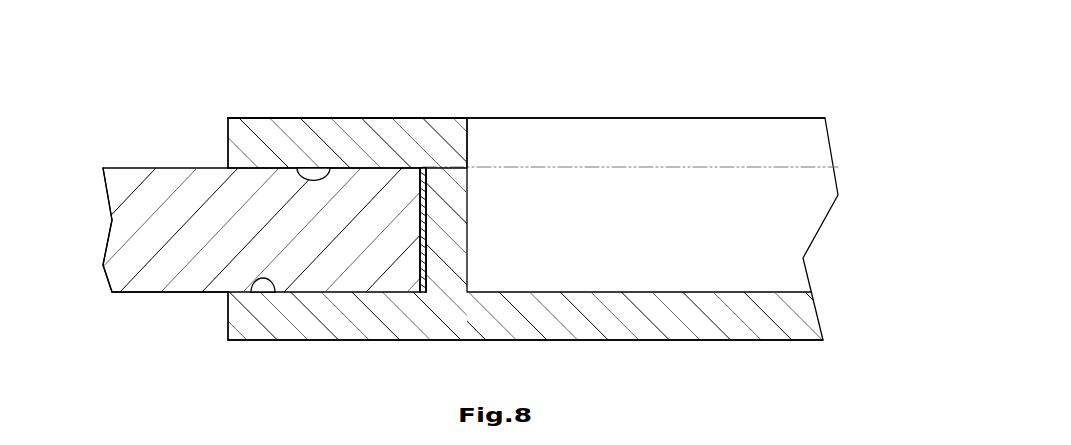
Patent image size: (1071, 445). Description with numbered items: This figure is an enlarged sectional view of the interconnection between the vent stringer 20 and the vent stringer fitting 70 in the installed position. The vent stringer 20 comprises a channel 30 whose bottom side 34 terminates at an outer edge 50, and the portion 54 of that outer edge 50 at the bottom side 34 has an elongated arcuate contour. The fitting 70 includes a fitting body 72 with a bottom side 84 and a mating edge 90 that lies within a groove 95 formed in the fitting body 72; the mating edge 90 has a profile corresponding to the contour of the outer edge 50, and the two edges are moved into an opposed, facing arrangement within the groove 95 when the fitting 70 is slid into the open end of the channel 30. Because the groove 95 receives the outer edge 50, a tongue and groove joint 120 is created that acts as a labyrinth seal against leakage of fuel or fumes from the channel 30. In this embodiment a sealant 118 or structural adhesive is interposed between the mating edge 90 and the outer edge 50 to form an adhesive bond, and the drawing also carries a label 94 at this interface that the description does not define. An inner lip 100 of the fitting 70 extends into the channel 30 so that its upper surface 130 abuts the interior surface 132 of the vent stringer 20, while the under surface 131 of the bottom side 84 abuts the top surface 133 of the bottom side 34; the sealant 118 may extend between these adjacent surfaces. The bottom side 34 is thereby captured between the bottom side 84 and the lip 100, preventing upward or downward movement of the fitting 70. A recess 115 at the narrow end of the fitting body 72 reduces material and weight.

The vent stringer 20 is at (96, 190).
The channel 30 is at (108, 293).
The bottom side 34 is at (173, 242).
The outer edge 50 is at (425, 218).
The portion of the outer edge 54 is at (425, 232).
The vent stringer fitting 70 is at (675, 118).
The fitting body 72 is at (583, 118).
The bottom side of the fitting body 84 is at (287, 145).
The mating edge 90 is at (420, 200).
The sealing layer 94 is at (420, 245).
The groove 95 is at (211, 298).
The inner lip 100 is at (348, 310).
The recess 115 is at (663, 230).
The sealant 118 is at (427, 258).
The tongue and groove joint 120 is at (200, 150).
The upper surface of the lip 130 is at (251, 292).
The under surface of the bottom side 131 is at (323, 160).
The interior surface 132 is at (305, 292).
The top surface of the bottom side 133 is at (352, 165).